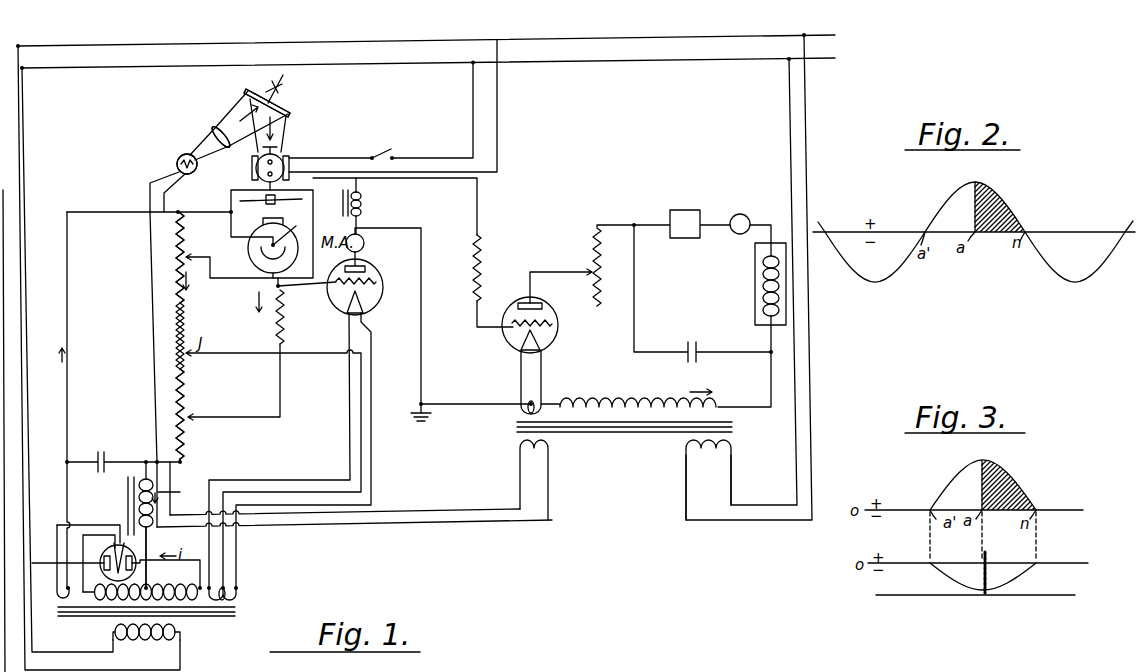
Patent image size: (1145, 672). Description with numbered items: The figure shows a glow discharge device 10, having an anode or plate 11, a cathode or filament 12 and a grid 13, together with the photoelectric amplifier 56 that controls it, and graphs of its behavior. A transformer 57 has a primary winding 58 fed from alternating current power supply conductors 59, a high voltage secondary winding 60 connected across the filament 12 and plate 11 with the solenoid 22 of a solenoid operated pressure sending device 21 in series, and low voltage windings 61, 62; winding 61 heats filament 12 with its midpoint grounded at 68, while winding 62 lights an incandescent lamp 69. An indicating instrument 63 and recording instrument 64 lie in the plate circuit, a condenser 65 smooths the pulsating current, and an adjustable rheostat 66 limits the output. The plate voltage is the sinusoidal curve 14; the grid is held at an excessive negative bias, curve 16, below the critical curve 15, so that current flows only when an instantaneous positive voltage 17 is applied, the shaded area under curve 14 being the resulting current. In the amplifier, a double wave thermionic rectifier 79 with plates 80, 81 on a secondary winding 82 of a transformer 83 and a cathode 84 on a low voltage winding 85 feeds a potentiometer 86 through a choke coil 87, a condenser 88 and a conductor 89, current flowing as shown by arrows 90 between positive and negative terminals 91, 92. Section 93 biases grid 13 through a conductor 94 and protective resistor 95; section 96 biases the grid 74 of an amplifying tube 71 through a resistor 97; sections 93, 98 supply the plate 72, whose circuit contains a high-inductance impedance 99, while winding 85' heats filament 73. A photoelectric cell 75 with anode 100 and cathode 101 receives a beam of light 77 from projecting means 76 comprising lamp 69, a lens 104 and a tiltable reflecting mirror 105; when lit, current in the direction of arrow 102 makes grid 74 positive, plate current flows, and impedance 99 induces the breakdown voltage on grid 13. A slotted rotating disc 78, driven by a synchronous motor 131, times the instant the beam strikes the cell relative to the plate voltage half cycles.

In FIG. 1, the glow discharge device 10 is at (484, 357).
In FIG. 1, the anode or plate 11 is at (541, 308).
In FIG. 1, the cathode or filament 12 is at (548, 341).
In FIG. 1, the grid 13 is at (553, 323).
In FIG. 2, the sinusoidal curve 14 is at (1012, 208).
In FIG. 3, the sinusoidal curve 14 is at (1011, 480).
In FIG. 3, the critical grid bias curve 15 is at (1018, 570).
In FIG. 3, the excessive negative bias curve 16 is at (918, 595).
In FIG. 3, the instantaneous positive grid bias voltage 17 is at (984, 555).
In FIG. 1, the solenoid operated pressure sending device 21 is at (739, 288).
In FIG. 1, the solenoid 22 is at (760, 298).
In FIG. 1, the photoelectric amplifier 56 is at (134, 170).
In FIG. 1, the transformer 57 is at (634, 459).
In FIG. 1, the primary winding 58 is at (709, 453).
In FIG. 1, the alternating current power supply conductors 59 is at (835, 35).
In FIG. 1, the high voltage secondary winding 60 is at (668, 401).
In FIG. 1, the low voltage winding 61 is at (518, 412).
In FIG. 1, the low voltage winding 62 is at (517, 449).
In FIG. 1, the indicating current measuring instrument 63 is at (747, 215).
In FIG. 1, the recording instrument 64 is at (689, 210).
In FIG. 1, the condenser 65 is at (698, 353).
In FIG. 1, the adjustable rheostat 66 is at (594, 265).
In FIG. 1, the ground 68 is at (427, 415).
In FIG. 1, the incandescent lamp 69 is at (182, 156).
In FIG. 1, the amplifying tube 71 is at (332, 300).
In FIG. 1, the plate 72 is at (363, 262).
In FIG. 1, the filament 73 is at (370, 302).
In FIG. 1, the grid 74 is at (376, 282).
In FIG. 1, the photoelectric cell 75 is at (251, 261).
In FIG. 1, the means for projecting a beam of light 76 is at (225, 109).
In FIG. 1, the beam of light 77 is at (293, 150).
In FIG. 1, the rotating screen or disc 78 is at (240, 199).
In FIG. 1, the double wave thermionic rectifier 79 is at (103, 553).
In FIG. 1, the plate 80 is at (60, 568).
In FIG. 1, the plate 81 is at (126, 557).
In FIG. 1, the secondary winding 82 is at (185, 616).
In FIG. 1, the transformer 83 is at (101, 644).
In FIG. 1, the filament or cathode 84 is at (133, 570).
In FIG. 1, the low voltage winding 85 is at (117, 564).
In FIG. 1, the low voltage winding 85' is at (243, 589).
In FIG. 1, the potentiometer 86 is at (208, 334).
In FIG. 1, the choke coil 87 is at (135, 478).
In FIG. 1, the condenser 88 is at (102, 462).
In FIG. 1, the conductor 89 is at (68, 413).
In FIG. 1, the arrows 90 is at (124, 387).
In FIG. 1, the terminal 91 is at (179, 210).
In FIG. 1, the terminal 92 is at (183, 462).
In FIG. 1, the section 93 is at (184, 238).
In FIG. 1, the conductor 94 is at (479, 211).
In FIG. 1, the protective resistor 95 is at (483, 275).
In FIG. 1, the section 96 is at (184, 387).
In FIG. 1, the resistor 97 is at (284, 320).
In FIG. 1, the section 98 is at (184, 307).
In FIG. 1, the impedance 99 is at (361, 207).
In FIG. 1, the anode 100 is at (300, 221).
In FIG. 1, the cathode 101 is at (263, 263).
In FIG. 1, the arrow 102 is at (246, 302).
In FIG. 1, the lens 104 is at (216, 128).
In FIG. 1, the reflecting mirror 105 is at (284, 110).
In FIG. 1, the synchronous motor 131 is at (253, 170).